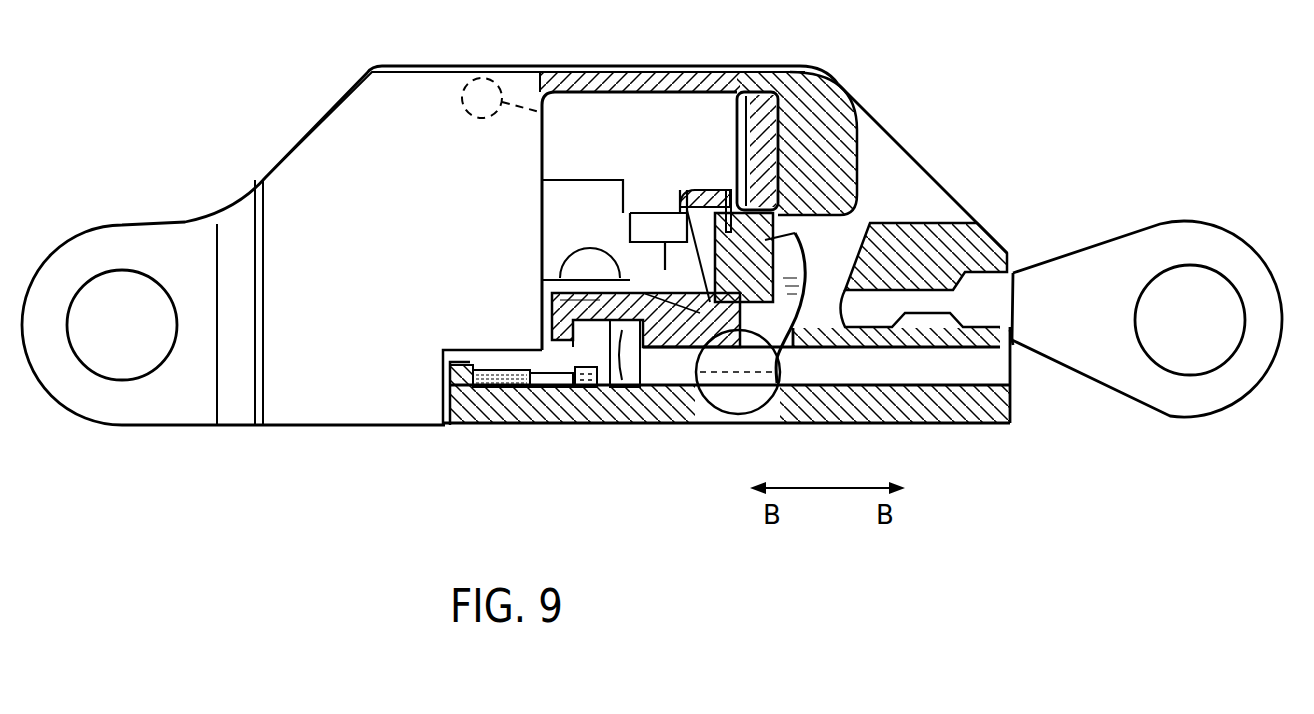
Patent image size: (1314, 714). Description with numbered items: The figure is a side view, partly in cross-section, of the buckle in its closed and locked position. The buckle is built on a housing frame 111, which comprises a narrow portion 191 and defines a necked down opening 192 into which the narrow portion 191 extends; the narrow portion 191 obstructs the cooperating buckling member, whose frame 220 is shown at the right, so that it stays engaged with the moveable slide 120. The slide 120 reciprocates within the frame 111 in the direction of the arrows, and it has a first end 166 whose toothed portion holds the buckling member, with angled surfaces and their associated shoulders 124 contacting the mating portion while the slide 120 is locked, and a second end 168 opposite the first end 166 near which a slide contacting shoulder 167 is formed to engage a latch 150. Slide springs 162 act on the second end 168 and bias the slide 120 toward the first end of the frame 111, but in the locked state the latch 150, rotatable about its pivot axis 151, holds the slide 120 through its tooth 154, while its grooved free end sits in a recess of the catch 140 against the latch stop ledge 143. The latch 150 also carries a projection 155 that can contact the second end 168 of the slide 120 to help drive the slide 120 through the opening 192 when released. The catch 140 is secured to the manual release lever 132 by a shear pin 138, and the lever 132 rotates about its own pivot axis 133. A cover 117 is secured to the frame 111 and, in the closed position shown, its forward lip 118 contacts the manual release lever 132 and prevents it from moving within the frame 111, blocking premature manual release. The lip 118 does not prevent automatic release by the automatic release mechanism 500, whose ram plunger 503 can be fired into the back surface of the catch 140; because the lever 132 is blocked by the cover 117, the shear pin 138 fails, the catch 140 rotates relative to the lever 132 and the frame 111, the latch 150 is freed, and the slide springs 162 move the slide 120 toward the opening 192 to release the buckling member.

The automatic release mechanism 500 is at (358, 232).
The cover 117 is at (810, 85).
The manual release lever 132 is at (742, 93).
The housing frame 111 is at (880, 140).
The forward lip 118 is at (852, 168).
The shear pin 138 is at (728, 190).
The latch 150 is at (666, 272).
The ram plunger 503 is at (670, 210).
The pivot axis 151 is at (562, 275).
The catch 140 is at (803, 233).
The narrow portion 191 is at (940, 272).
The necked down opening 192 is at (1014, 269).
The shoulders 124 is at (930, 315).
The slide 120 is at (975, 367).
The latch stop ledge 143 is at (748, 402).
The pivot axis 133 is at (728, 395).
The tooth 154 is at (672, 355).
The slide contacting shoulder 167 is at (622, 395).
The second end 168 is at (585, 384).
The slide springs 162 is at (492, 400).
The projection 155 is at (545, 355).
The frame 220 is at (1180, 227).
The first end 166 is at (1015, 347).